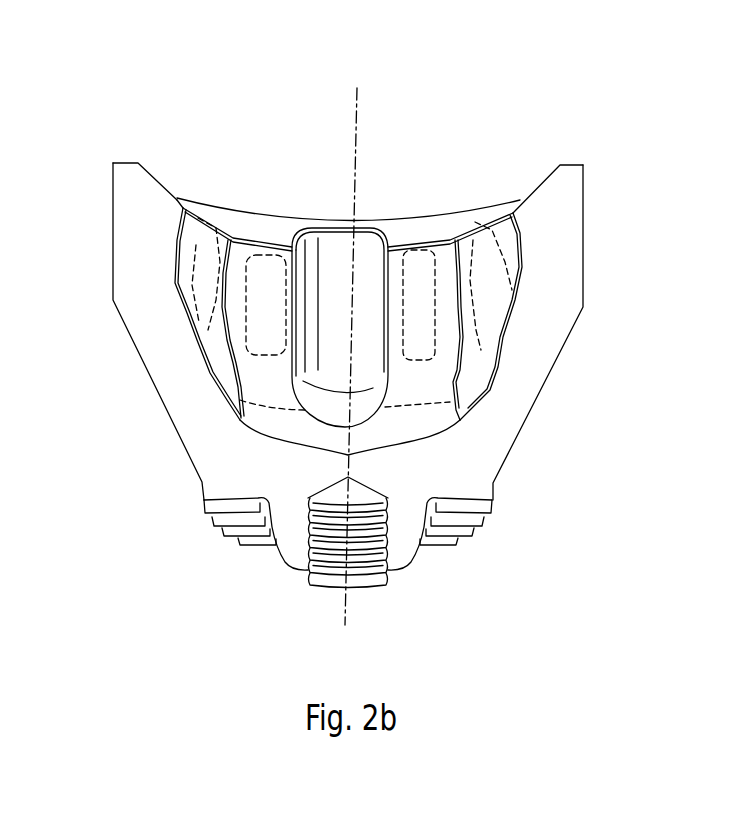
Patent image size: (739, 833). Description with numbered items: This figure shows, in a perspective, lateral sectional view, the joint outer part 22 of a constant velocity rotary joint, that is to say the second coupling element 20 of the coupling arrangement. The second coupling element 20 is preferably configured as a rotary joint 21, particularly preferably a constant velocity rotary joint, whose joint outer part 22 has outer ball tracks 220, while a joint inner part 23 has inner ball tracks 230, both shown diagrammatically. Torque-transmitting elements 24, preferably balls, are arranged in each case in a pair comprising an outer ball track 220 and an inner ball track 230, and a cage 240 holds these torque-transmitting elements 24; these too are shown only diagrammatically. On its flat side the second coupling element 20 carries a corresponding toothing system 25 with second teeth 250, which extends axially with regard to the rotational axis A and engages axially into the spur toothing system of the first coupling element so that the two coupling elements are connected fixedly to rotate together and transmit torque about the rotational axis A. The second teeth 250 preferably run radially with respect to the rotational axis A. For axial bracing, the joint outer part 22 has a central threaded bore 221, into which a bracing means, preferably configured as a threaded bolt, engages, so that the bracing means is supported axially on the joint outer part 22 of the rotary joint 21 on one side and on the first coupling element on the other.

The second coupling element 20 is at (330, 334).
The rotary joint 21 is at (348, 209).
The joint outer part 22 is at (130, 210).
The joint inner part 23 is at (265, 322).
The torque-transmitting elements 24 is at (498, 290).
The outer ball tracks 220 is at (326, 242).
The central threaded bore 221 is at (376, 575).
The inner ball tracks 230 is at (258, 238).
The cage 240 is at (473, 347).
The corresponding toothing system 25 is at (196, 524).
The second teeth 250 is at (488, 518).
The rotational axis A is at (350, 107).